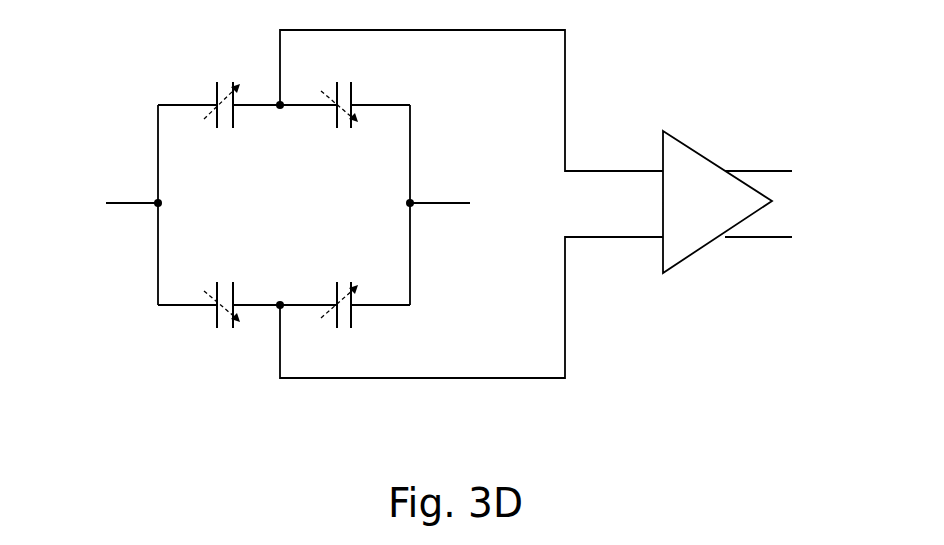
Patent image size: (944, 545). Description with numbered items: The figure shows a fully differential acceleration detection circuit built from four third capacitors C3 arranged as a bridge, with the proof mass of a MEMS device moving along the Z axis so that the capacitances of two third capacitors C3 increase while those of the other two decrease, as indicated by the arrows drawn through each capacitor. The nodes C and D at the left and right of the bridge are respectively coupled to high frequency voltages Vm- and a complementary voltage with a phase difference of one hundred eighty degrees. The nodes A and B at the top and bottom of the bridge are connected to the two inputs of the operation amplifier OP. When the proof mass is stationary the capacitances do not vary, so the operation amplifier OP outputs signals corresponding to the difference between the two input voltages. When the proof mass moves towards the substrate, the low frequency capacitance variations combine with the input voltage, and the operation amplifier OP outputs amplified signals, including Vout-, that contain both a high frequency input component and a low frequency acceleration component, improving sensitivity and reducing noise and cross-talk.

The third capacitor C3 is at (282, 206).
The node A is at (282, 121).
The node B is at (282, 285).
The node C is at (143, 223).
The node D is at (425, 223).
The high frequency voltage Vm- is at (99, 197).
The operation amplifier OP is at (717, 202).
The negative output signal Vout- is at (802, 239).